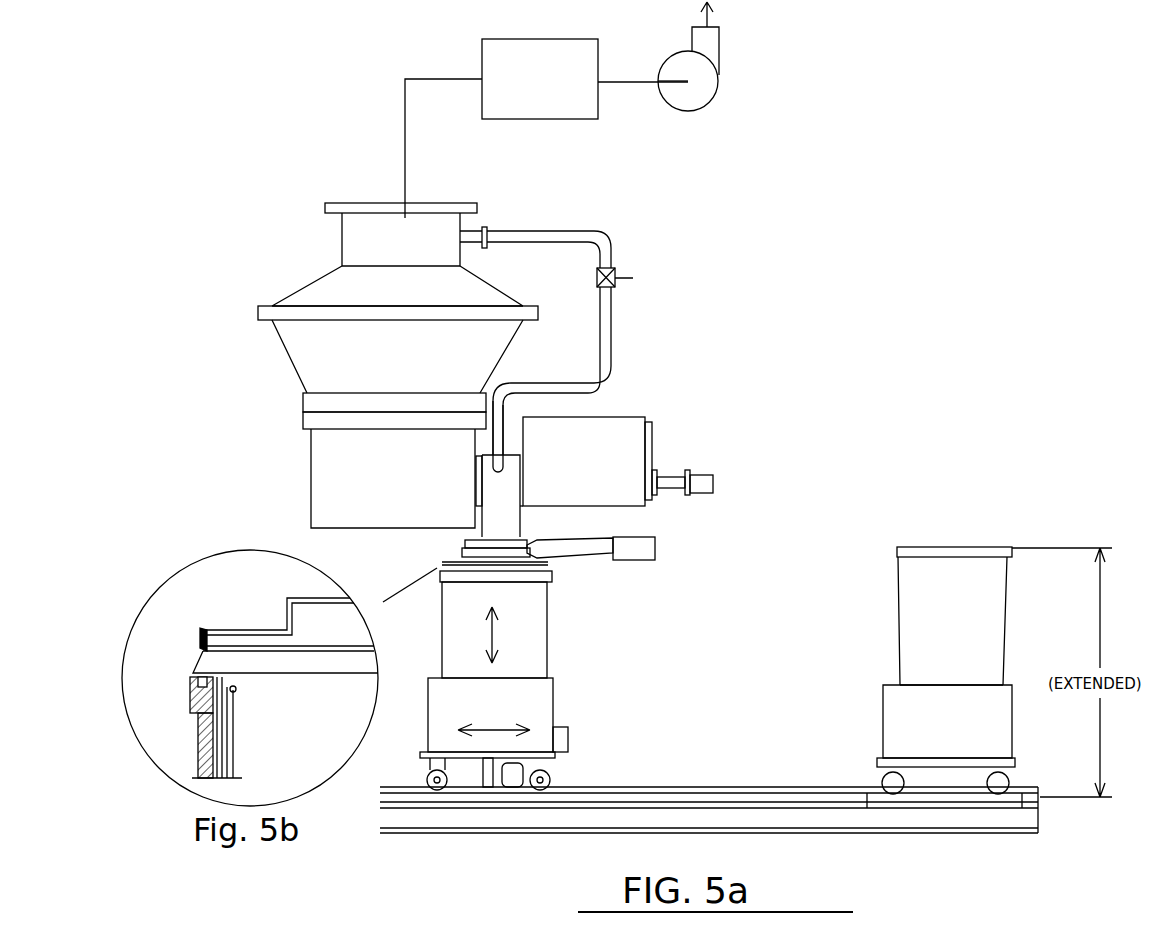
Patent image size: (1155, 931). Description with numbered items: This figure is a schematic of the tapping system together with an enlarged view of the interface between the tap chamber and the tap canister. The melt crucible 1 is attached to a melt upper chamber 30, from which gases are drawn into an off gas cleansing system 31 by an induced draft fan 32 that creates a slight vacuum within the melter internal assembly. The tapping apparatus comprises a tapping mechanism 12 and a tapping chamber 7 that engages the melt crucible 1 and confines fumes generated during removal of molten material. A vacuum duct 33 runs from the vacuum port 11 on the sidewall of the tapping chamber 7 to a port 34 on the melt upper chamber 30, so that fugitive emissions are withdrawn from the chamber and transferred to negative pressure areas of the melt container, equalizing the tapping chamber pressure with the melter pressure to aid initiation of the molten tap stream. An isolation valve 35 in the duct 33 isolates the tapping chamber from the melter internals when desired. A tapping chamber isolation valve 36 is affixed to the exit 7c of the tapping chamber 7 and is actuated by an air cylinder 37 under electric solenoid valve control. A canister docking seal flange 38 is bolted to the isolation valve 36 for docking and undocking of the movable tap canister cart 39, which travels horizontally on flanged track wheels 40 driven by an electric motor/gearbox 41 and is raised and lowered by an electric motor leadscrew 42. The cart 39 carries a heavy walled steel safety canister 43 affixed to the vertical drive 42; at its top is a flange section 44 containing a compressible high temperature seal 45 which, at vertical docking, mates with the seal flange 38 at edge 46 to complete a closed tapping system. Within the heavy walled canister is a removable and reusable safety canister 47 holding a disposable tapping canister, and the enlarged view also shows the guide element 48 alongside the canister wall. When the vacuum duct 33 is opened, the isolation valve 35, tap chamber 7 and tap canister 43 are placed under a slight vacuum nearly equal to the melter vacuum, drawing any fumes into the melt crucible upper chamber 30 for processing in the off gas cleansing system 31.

In FIG. 5a, the melt crucible 1 is at (300, 460).
In FIG. 5a, the tapping chamber 7 is at (520, 516).
In FIG. 5a, the exit 7c is at (513, 543).
In FIG. 5a, the vacuum port 11 is at (507, 470).
In FIG. 5a, the tapping mechanism 12 is at (630, 417).
In FIG. 5a, the melt upper chamber 30 is at (308, 282).
In FIG. 5a, the off gas cleansing system 31 is at (555, 120).
In FIG. 5a, the induced draft fan 32 is at (702, 102).
In FIG. 5a, the vacuum duct 33 is at (610, 352).
In FIG. 5a, the port 34 is at (485, 226).
In FIG. 5a, the isolation valve 35 is at (625, 263).
In FIG. 5a, the tapping chamber isolation valve 36 is at (502, 543).
In FIG. 5a, the air cylinder 37 is at (655, 548).
In FIG. 5b, the canister docking seal flange 38 is at (255, 630).
In FIG. 5a, the tap canister cart 39 is at (582, 663).
In FIG. 5a, the flanged track wheels 40 is at (537, 788).
In FIG. 5a, the electric motor/gearbox 41 is at (560, 763).
In FIG. 5a, the electric motor leadscrew 42 is at (481, 772).
In FIG. 5a, the heavy walled steel safety canister 43 is at (438, 645).
In FIG. 5b, the heavy walled steel safety canister 43 is at (202, 730).
In FIG. 5b, the flange section 44 is at (190, 698).
In FIG. 5b, the compressible high temperature seal 45 is at (193, 673).
In FIG. 5b, the edge 46 is at (200, 640).
In FIG. 5b, the removable and reusable safety canister 47 is at (235, 697).
In FIG. 5b, the guide rod 48 is at (235, 732).